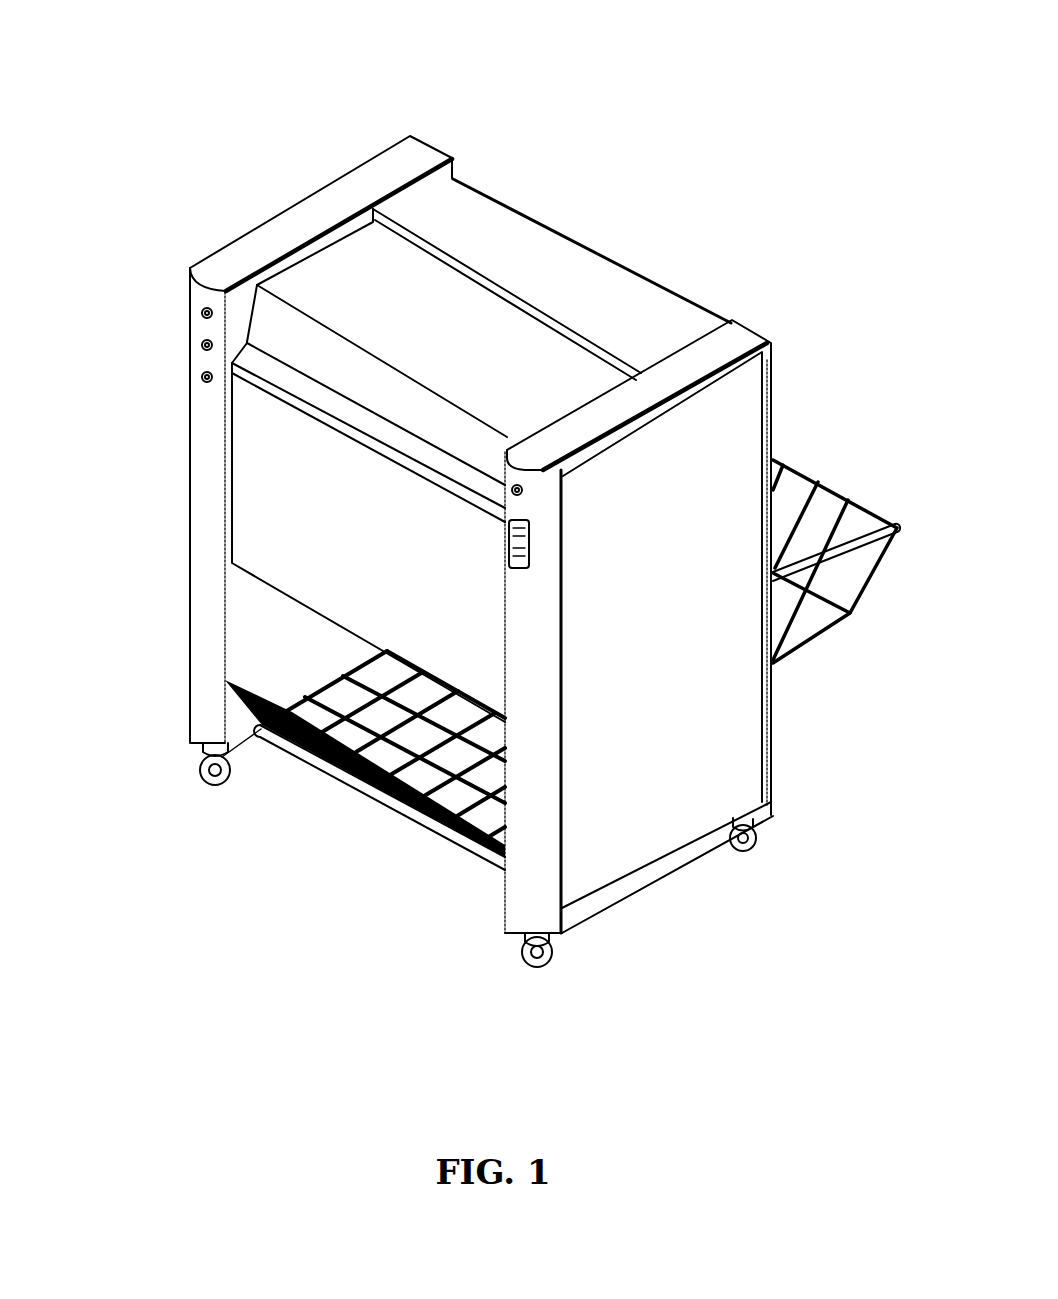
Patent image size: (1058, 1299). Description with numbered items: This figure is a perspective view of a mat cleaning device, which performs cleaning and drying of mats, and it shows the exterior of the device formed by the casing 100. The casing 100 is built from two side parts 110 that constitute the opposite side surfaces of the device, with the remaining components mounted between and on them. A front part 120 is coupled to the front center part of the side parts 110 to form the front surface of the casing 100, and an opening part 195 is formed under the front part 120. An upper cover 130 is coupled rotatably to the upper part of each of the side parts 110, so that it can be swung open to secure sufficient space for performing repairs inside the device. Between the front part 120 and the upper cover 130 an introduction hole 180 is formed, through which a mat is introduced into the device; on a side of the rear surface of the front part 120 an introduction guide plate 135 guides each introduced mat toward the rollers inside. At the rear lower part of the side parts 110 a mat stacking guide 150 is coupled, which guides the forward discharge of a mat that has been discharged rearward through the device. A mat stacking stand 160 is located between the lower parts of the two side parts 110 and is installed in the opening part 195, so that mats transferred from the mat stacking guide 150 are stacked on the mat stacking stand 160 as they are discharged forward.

The casing 100 is at (645, 210).
The side parts 110 is at (630, 823).
The front part 120 is at (355, 585).
The upper cover 130 is at (355, 265).
The introduction guide plate 135 is at (280, 390).
The mat stacking guide 150 is at (843, 520).
The mat stacking stand 160 is at (465, 832).
The introduction hole 180 is at (382, 428).
The opening part 195 is at (403, 747).